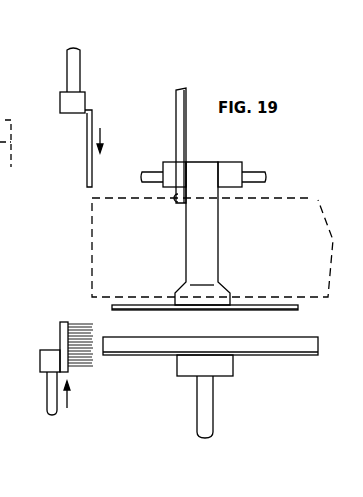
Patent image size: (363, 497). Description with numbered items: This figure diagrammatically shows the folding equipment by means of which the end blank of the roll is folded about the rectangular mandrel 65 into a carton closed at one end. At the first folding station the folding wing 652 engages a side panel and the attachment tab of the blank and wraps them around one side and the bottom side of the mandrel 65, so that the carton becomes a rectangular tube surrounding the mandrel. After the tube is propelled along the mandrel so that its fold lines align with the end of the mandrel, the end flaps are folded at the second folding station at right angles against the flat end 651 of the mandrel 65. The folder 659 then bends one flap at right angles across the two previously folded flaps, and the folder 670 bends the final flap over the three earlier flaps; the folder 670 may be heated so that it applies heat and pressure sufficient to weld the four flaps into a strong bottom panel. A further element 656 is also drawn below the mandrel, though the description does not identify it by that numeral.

The rectangular mandrel 65 is at (190, 196).
The flat end of the mandrel 651 is at (94, 259).
The folding wing 652 is at (210, 260).
The disk 656 is at (308, 338).
The folder 659 is at (87, 175).
The folder 670 is at (61, 322).